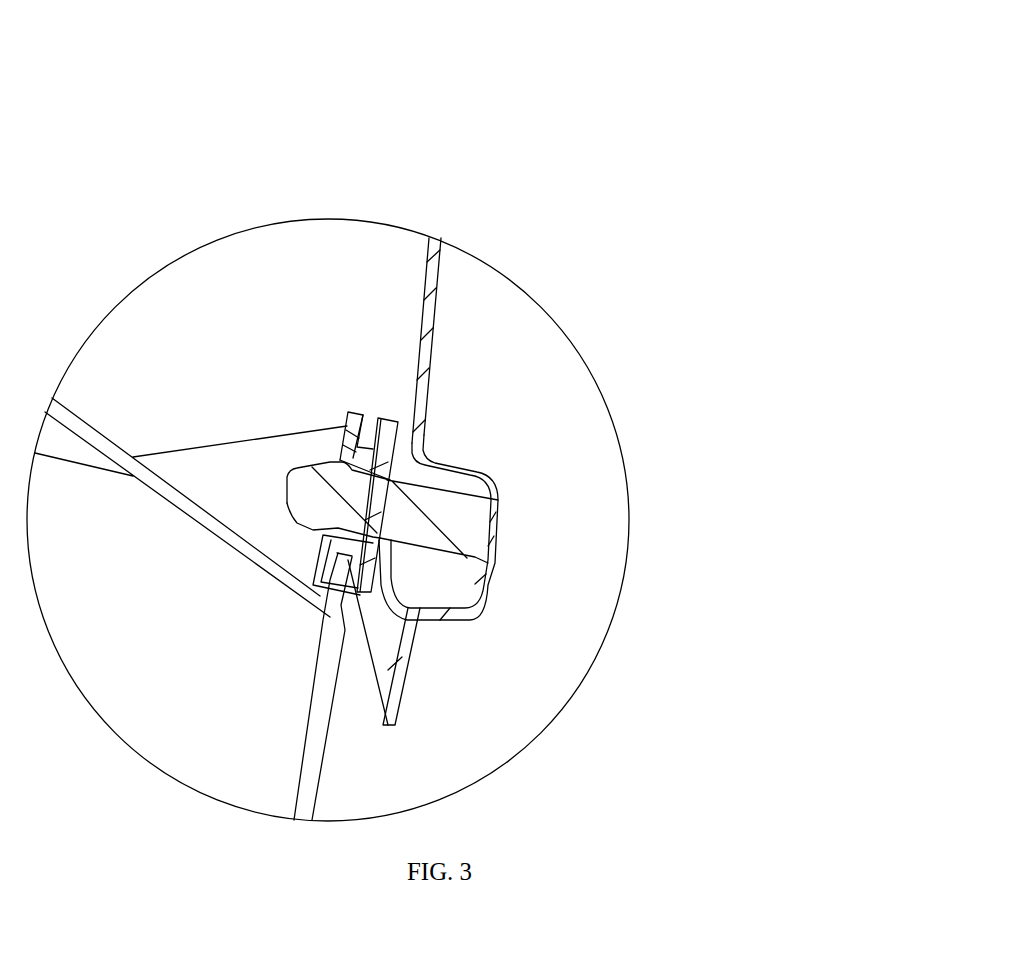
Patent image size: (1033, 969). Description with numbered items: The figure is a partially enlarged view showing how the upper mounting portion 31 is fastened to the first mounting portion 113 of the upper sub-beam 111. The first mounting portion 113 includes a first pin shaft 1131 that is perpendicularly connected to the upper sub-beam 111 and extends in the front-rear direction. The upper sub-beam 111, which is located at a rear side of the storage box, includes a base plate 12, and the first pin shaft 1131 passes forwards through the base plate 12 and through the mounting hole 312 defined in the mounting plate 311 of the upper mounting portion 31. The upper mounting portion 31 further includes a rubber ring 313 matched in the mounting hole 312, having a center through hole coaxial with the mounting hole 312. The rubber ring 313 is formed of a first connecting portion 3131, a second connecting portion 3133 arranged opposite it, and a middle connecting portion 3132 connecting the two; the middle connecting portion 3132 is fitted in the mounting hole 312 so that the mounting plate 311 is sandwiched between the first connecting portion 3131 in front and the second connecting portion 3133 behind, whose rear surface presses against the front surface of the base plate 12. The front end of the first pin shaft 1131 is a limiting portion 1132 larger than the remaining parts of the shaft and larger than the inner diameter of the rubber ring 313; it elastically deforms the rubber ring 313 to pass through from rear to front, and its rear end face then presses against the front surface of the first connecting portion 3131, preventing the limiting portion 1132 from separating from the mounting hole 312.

The base plate 12 is at (397, 605).
The upper mounting portion 31 is at (267, 507).
The mounting plate 311 is at (327, 617).
The mounting hole 312 is at (390, 683).
The rubber ring 313 is at (207, 3).
The first connecting portion 3131 is at (350, 413).
The middle connecting portion 3132 is at (360, 417).
The second connecting portion 3133 is at (385, 417).
The upper sub-beam 111 is at (450, 467).
The first mounting portion 113 is at (613, 483).
The first pin shaft 1131 is at (447, 532).
The limiting portion 1132 is at (313, 493).